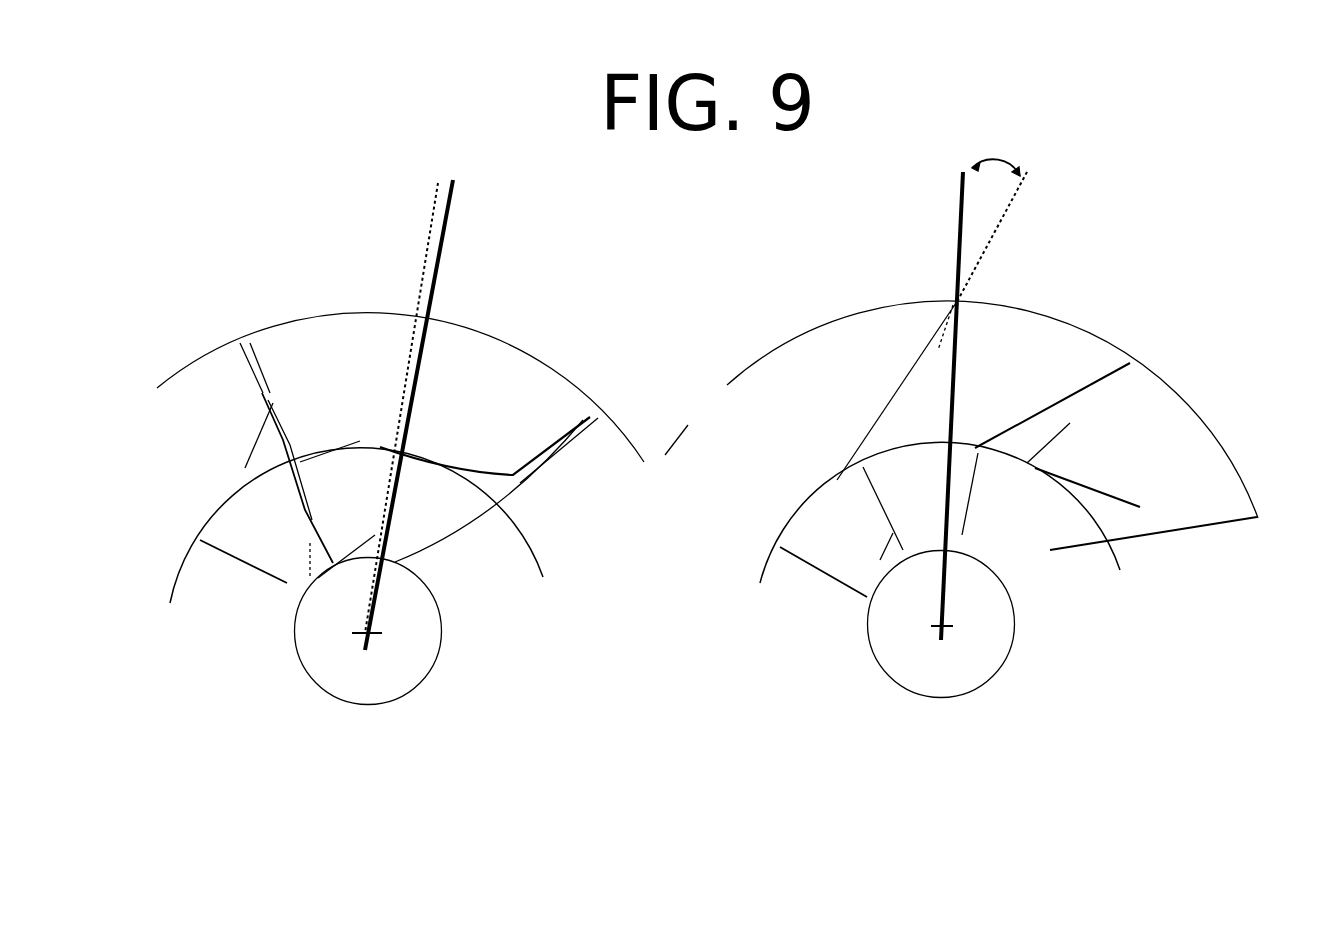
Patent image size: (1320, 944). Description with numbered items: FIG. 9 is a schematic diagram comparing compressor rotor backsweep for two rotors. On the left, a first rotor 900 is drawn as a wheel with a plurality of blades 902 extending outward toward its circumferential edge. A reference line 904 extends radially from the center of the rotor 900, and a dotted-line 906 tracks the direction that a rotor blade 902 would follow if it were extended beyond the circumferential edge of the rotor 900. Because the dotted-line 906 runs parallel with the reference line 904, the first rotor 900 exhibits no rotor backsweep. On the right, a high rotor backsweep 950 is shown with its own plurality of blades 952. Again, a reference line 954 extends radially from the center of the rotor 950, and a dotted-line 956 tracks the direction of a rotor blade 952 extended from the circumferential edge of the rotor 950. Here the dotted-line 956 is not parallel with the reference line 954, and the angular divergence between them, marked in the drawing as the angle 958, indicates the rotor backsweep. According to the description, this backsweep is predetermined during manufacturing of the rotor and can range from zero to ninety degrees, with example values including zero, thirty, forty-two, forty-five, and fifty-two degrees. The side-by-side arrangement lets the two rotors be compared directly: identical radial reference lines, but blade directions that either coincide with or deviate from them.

The first rotor 900 is at (383, 820).
The blades 902 is at (367, 433).
The reference line 904 is at (433, 300).
The dotted-line 906 is at (423, 275).
The high rotor backsweep 950 is at (973, 820).
The blades 952 is at (923, 355).
The reference line 954 is at (957, 255).
The dotted-line 956 is at (961, 297).
The rake angle 958 is at (1003, 162).